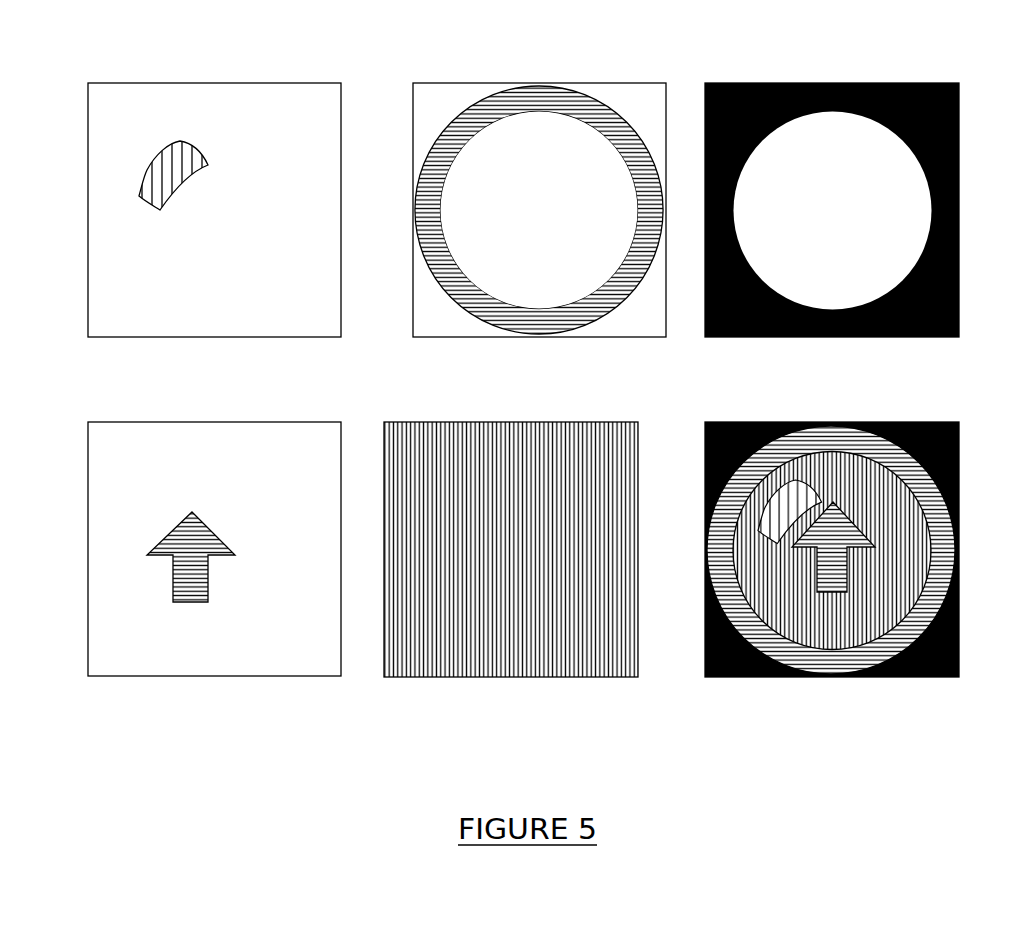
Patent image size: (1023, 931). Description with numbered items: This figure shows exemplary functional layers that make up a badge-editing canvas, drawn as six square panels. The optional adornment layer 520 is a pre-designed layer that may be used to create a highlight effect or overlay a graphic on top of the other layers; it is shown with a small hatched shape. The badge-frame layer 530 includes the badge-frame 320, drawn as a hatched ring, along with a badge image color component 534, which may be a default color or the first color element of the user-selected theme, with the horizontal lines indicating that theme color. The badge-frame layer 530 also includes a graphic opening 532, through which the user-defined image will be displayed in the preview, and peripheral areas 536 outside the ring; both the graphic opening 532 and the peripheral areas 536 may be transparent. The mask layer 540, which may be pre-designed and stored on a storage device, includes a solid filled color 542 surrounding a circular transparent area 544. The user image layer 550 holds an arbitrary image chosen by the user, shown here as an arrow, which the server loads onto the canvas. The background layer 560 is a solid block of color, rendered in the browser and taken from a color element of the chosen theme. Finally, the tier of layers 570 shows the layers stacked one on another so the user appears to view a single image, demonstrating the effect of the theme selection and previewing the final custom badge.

The badge-frame 320 is at (514, 204).
The adornment layer 520 is at (214, 231).
The badge-frame layer 530 is at (527, 204).
The graphic opening 532 is at (598, 186).
The badge image color component 534 is at (463, 288).
The peripheral areas 536 is at (648, 103).
The mask layer 540 is at (832, 235).
The solid filled color 542 is at (755, 337).
The transparent area 544 is at (833, 211).
The user image layer 550 is at (214, 571).
The background layer 560 is at (518, 572).
The tier of layers 570 is at (856, 573).